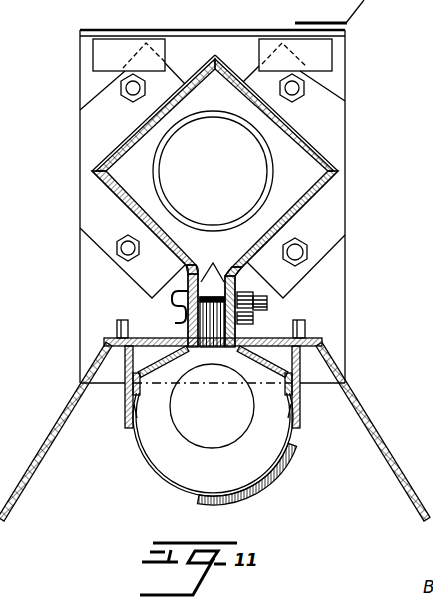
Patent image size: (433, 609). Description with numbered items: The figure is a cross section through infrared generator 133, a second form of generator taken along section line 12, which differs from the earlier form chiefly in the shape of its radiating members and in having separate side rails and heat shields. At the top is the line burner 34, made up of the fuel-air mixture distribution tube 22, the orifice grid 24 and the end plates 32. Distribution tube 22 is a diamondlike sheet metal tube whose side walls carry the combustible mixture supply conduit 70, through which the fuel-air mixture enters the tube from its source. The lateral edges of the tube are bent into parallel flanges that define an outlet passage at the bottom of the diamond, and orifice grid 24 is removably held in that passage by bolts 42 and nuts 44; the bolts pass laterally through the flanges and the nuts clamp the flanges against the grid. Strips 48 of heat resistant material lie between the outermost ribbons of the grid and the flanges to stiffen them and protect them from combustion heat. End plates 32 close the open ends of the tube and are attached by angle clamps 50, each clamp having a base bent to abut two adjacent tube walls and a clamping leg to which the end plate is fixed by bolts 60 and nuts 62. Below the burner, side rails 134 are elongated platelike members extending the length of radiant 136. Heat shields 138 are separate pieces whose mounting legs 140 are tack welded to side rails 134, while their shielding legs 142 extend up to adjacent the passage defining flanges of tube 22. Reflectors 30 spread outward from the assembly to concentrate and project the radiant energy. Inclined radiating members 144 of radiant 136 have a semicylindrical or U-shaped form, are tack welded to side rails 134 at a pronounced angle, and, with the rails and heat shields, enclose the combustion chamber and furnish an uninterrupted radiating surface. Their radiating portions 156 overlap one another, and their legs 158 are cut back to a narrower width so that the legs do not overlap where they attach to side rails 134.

The infrared generator 133 is at (80, 24).
The section line 12 is at (213, 52).
The angle clamps 50 is at (90, 126).
The combustible mixture supply conduit 70 is at (263, 157).
The line burner 34 is at (99, 195).
The fuel-air mixture distribution tube 22 is at (311, 200).
The end plates 32 is at (86, 258).
The bolts 60 is at (296, 243).
The nuts 62 is at (306, 245).
The strips of heat resistant material 48 is at (224, 278).
The bolts 42 is at (176, 290).
The nuts 44 is at (257, 292).
The shielding legs 142 is at (147, 326).
The orifice grid 24 is at (186, 323).
The heat shields 138 is at (248, 363).
The reflectors 30 is at (66, 406).
The side rails 134 is at (124, 398).
The mounting legs 140 is at (138, 392).
The legs of radiating members 158 is at (137, 414).
The radiant 136 is at (292, 471).
The inclined radiating members 144 is at (172, 492).
The radiating portions 156 is at (230, 494).